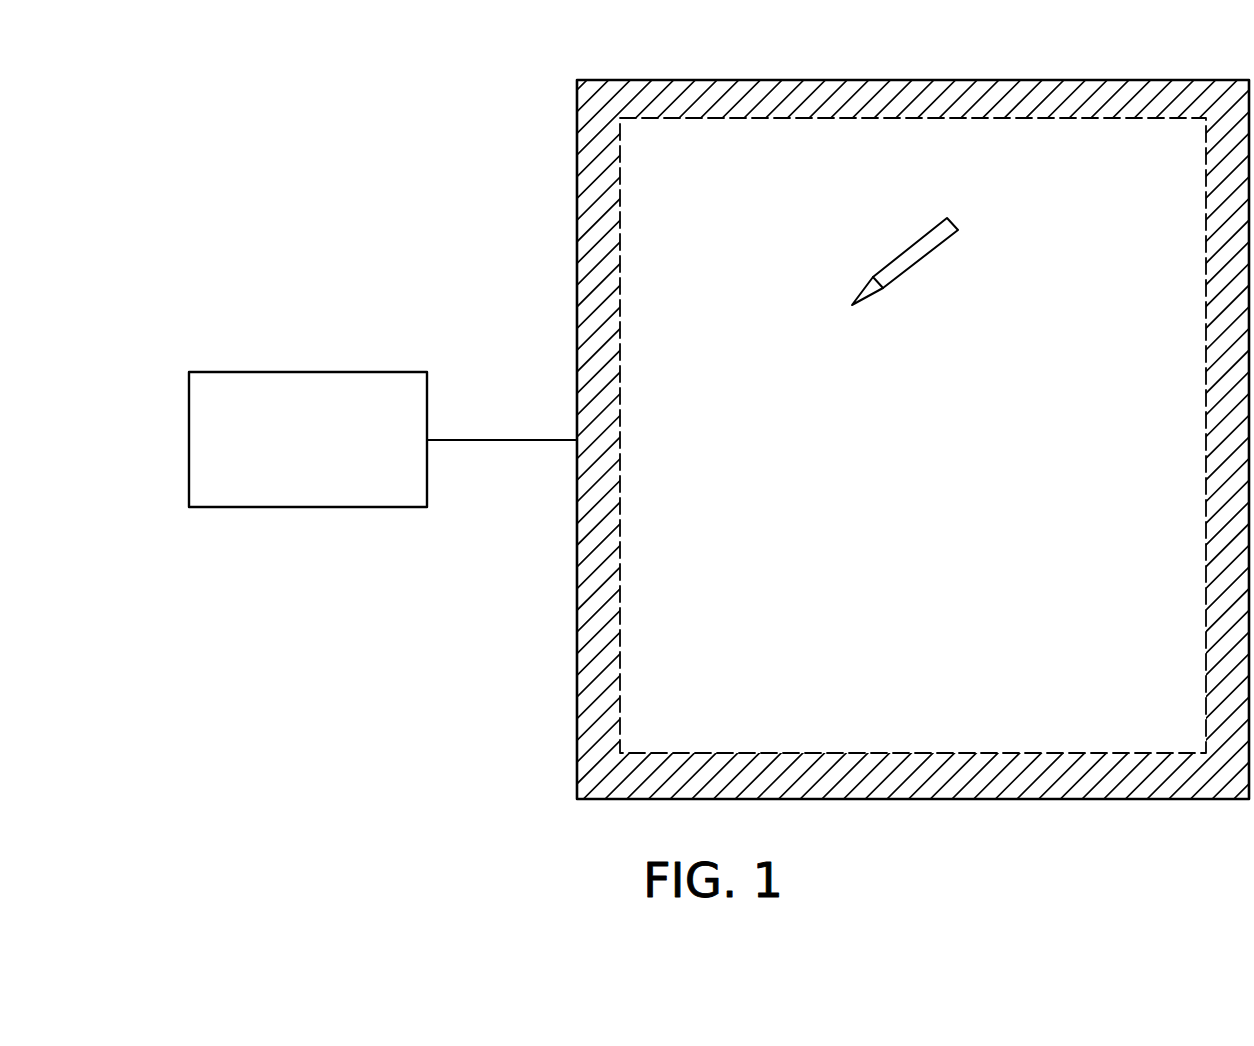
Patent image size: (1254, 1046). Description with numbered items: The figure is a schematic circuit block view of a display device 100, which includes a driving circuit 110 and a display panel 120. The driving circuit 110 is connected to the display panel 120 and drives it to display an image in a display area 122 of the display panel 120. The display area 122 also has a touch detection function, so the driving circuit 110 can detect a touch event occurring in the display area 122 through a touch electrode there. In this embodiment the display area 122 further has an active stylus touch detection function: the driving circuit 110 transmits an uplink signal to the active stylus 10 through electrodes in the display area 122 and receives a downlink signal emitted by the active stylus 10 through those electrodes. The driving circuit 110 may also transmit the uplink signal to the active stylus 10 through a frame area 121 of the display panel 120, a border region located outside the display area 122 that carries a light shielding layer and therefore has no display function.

The active stylus 10 is at (908, 247).
The display device 100 is at (719, 439).
The driving circuit 110 is at (307, 507).
The display panel 120 is at (830, 439).
The frame area 121 is at (577, 516).
The display area 122 is at (655, 558).